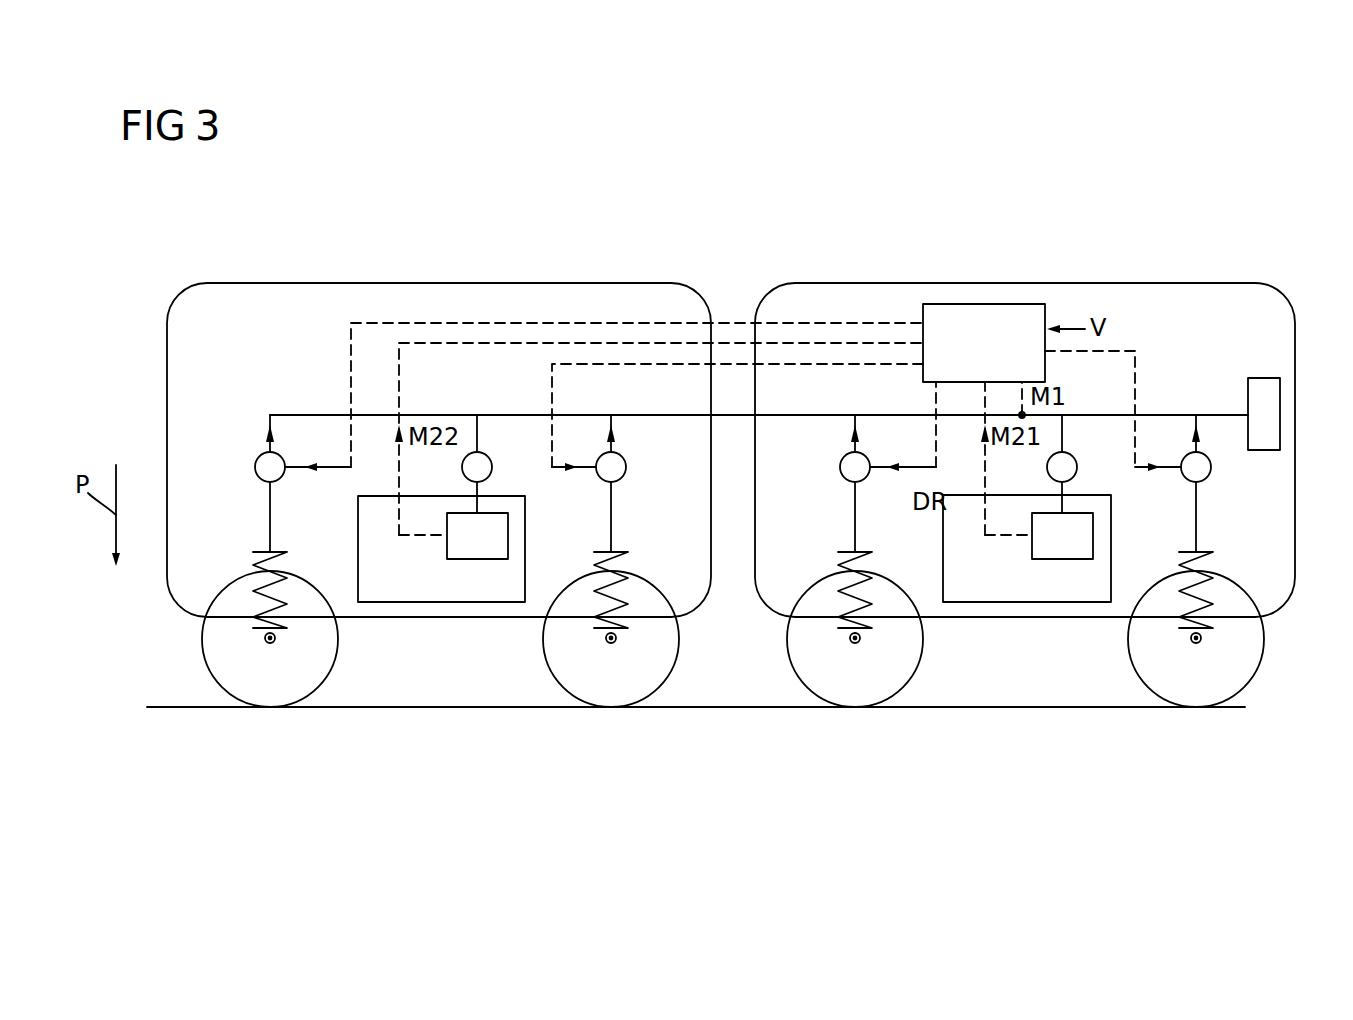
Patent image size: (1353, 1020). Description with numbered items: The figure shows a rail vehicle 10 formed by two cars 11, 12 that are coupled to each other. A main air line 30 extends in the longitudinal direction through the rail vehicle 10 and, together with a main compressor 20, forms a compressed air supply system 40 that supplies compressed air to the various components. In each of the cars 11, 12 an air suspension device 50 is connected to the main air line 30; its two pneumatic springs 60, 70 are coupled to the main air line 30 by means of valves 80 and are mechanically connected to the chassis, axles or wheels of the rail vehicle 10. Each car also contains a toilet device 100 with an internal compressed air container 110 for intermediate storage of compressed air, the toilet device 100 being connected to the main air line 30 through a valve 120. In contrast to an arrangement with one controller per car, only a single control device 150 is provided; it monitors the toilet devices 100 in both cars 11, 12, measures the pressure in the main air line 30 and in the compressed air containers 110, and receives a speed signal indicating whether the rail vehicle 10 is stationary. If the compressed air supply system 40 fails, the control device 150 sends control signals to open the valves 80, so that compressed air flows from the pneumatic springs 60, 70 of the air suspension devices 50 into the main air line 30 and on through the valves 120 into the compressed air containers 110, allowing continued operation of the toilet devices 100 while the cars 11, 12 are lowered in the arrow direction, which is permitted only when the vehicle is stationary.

The rail vehicle 10 is at (777, 238).
The car 11 is at (588, 305).
The car 12 is at (1178, 305).
The main compressor 20 is at (1262, 395).
The main air line 30 is at (781, 415).
The compressed air supply system 40 is at (1170, 398).
The air suspension device 50 is at (293, 636).
The pneumatic spring 60 is at (262, 634).
The pneumatic spring 70 is at (622, 620).
The valve 80 is at (260, 457).
The toilet device 100 is at (418, 589).
The compressed air container 110 is at (476, 548).
The valve 120 is at (482, 463).
The control device 150 is at (962, 320).